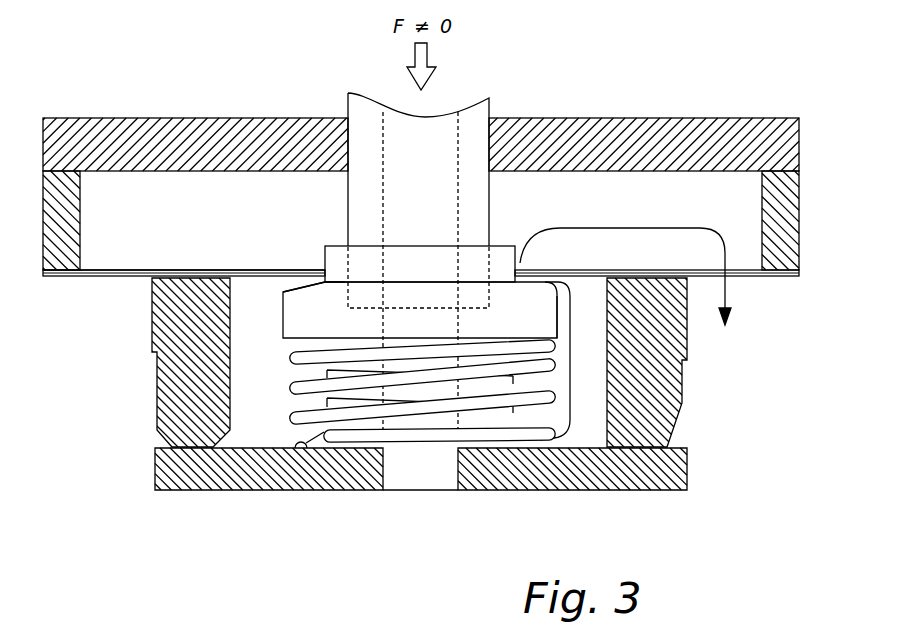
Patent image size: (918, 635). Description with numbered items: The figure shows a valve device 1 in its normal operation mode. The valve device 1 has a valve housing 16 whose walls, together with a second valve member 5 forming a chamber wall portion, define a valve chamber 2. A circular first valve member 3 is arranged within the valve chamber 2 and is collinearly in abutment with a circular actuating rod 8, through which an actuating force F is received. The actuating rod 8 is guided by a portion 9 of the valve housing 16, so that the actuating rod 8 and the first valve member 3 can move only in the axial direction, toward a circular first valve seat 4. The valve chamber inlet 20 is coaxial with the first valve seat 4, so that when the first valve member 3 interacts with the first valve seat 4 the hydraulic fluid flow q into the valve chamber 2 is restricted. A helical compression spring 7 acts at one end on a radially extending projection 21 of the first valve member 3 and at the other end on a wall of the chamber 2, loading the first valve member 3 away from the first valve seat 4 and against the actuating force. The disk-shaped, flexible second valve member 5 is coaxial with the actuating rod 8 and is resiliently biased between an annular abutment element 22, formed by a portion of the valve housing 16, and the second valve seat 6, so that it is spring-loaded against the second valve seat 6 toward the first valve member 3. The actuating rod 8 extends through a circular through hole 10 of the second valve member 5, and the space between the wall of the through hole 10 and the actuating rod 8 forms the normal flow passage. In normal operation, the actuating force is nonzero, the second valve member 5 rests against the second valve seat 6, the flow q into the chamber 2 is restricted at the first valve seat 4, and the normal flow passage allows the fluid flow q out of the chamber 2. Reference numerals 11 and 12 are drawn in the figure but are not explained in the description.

The valve device 1 is at (666, 547).
The valve chamber 2 is at (593, 322).
The first valve member 3 is at (480, 377).
The first valve seat 4 is at (497, 450).
The second valve member 5 is at (247, 270).
The second valve seat 6 is at (185, 270).
The helical compression spring 7 is at (300, 413).
The actuating rod 8 is at (468, 123).
The portion of the valve housing 9 is at (610, 140).
The through hole 10 is at (317, 272).
The cap 11 is at (320, 290).
The cap chamfer 12 is at (300, 283).
The valve housing 16 is at (183, 405).
The valve chamber inlet 20 is at (398, 480).
The radially extending projection 21 is at (547, 345).
The annular abutment element 22 is at (60, 205).
The hydraulic fluid flow q is at (468, 432).